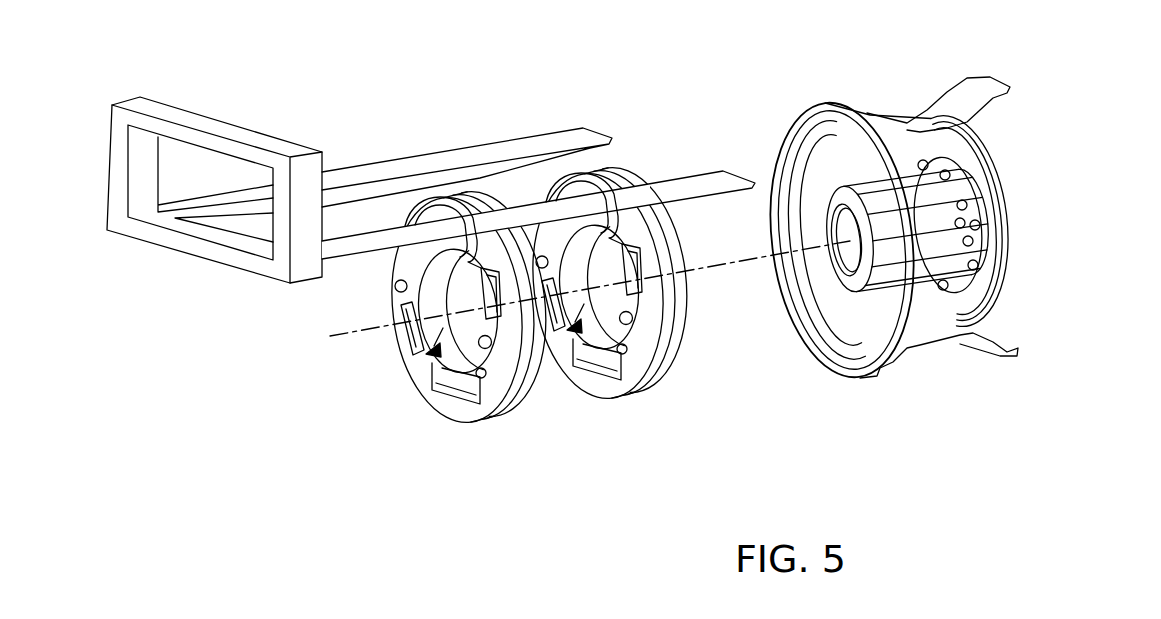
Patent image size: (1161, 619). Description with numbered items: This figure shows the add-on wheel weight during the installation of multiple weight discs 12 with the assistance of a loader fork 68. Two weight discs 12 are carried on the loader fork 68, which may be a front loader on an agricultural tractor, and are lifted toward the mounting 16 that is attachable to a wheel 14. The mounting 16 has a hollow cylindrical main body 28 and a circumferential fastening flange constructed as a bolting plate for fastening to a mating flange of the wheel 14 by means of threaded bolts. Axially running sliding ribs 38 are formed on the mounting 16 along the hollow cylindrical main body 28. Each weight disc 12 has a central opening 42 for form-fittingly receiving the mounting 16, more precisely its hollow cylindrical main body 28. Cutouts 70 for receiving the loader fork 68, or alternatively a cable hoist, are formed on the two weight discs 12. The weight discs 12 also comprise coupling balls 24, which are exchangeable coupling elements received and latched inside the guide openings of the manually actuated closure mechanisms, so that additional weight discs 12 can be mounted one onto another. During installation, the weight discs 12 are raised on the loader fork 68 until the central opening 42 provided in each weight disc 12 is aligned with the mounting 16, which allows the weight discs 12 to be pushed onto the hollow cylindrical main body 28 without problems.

The weight disc 12 is at (483, 440).
The wheel 14 is at (857, 358).
The mounting 16 is at (844, 323).
The coupling ball 24 is at (396, 288).
The hollow cylindrical main body 28 is at (903, 217).
The sliding ribs 38 is at (870, 268).
The central opening 42 is at (422, 367).
The loader fork 68 is at (272, 143).
The cutouts 70 is at (446, 240).